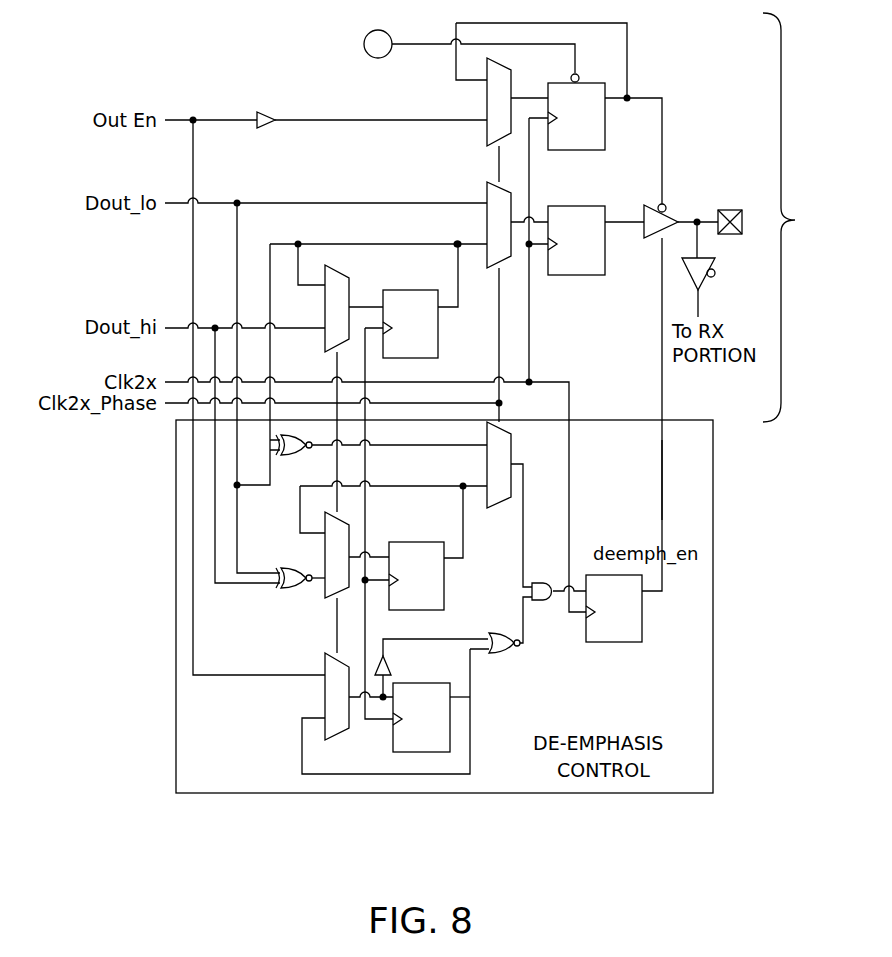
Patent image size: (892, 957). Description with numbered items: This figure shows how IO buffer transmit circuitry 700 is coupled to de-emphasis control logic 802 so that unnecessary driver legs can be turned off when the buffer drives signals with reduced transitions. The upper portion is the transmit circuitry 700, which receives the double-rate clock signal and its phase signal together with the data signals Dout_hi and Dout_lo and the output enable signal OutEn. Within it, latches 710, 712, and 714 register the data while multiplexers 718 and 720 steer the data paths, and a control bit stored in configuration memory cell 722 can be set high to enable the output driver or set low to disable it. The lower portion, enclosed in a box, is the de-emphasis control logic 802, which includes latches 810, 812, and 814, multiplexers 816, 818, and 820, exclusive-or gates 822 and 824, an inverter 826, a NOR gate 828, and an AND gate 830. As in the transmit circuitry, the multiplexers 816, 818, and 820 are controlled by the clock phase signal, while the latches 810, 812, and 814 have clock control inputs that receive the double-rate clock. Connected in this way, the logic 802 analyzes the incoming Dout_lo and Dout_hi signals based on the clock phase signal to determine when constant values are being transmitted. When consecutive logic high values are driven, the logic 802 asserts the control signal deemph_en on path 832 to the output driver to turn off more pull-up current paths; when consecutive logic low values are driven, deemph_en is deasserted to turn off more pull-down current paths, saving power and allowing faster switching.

The transmit circuitry 700 is at (799, 217).
The latch 710 is at (395, 290).
The latch 712 is at (578, 275).
The latch 714 is at (578, 150).
The multiplexer 718 is at (486, 215).
The multiplexer 720 is at (486, 92).
The configuration memory cell 722 is at (364, 45).
The de-emphasis control logic 802 is at (713, 500).
The latch 810 is at (395, 542).
The latch 812 is at (427, 752).
The latch 814 is at (613, 643).
The multiplexer 816 is at (320, 597).
The multiplexer 818 is at (333, 741).
The multiplexer 820 is at (486, 456).
The XNOR gate 822 is at (296, 568).
The exclusive-or gate 824 is at (296, 456).
The inverter 826 is at (394, 663).
The NOR gate 828 is at (500, 654).
The AND gate 830 is at (540, 583).
The path 832 is at (660, 478).